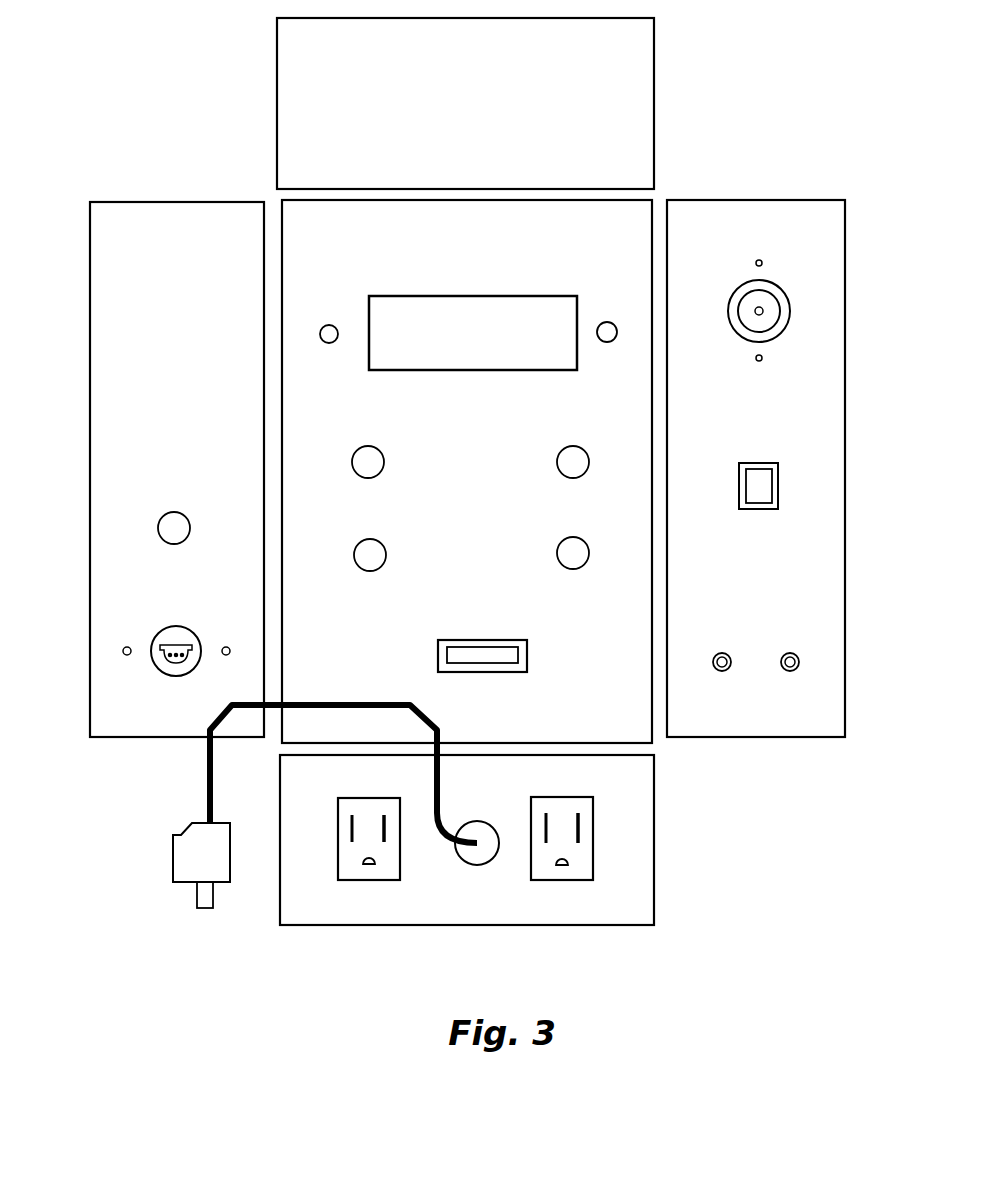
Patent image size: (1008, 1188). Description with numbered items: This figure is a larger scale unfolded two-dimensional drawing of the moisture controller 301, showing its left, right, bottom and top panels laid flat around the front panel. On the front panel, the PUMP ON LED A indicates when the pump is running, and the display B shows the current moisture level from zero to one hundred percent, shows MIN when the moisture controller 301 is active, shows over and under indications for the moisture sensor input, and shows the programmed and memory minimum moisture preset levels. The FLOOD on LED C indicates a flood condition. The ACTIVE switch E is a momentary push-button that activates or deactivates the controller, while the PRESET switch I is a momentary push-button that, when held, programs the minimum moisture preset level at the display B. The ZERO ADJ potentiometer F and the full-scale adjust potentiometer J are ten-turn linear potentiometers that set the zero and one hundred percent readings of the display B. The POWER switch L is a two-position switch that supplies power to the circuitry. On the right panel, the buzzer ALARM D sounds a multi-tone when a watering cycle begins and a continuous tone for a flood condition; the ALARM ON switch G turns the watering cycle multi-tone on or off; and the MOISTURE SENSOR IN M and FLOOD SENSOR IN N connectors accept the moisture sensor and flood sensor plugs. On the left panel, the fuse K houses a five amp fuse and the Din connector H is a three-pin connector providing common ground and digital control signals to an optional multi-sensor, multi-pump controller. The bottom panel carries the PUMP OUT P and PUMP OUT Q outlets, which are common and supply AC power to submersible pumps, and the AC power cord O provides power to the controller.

The moisture controller 301 is at (628, 222).
The PUMP ON LED A is at (325, 326).
The display B is at (385, 310).
The FLOOD on LED C is at (617, 332).
The buzzer ALARM D is at (791, 311).
The ACTIVE switch E is at (357, 454).
The ZERO ADJ potentiometer F is at (589, 456).
The ALARM ON switch G is at (779, 500).
The Din connector H is at (175, 677).
The PRESET switch I is at (376, 563).
The Adjust 100% potentiometer J is at (589, 552).
The fuse K is at (158, 520).
The POWER switch L is at (453, 657).
The MOISTURE SENSOR IN connector M is at (726, 652).
The FLOOD SENSOR IN connector N is at (800, 662).
The AC power cord O is at (180, 855).
The PUMP OUT outlet P is at (350, 865).
The PUMP OUT outlet Q is at (586, 858).